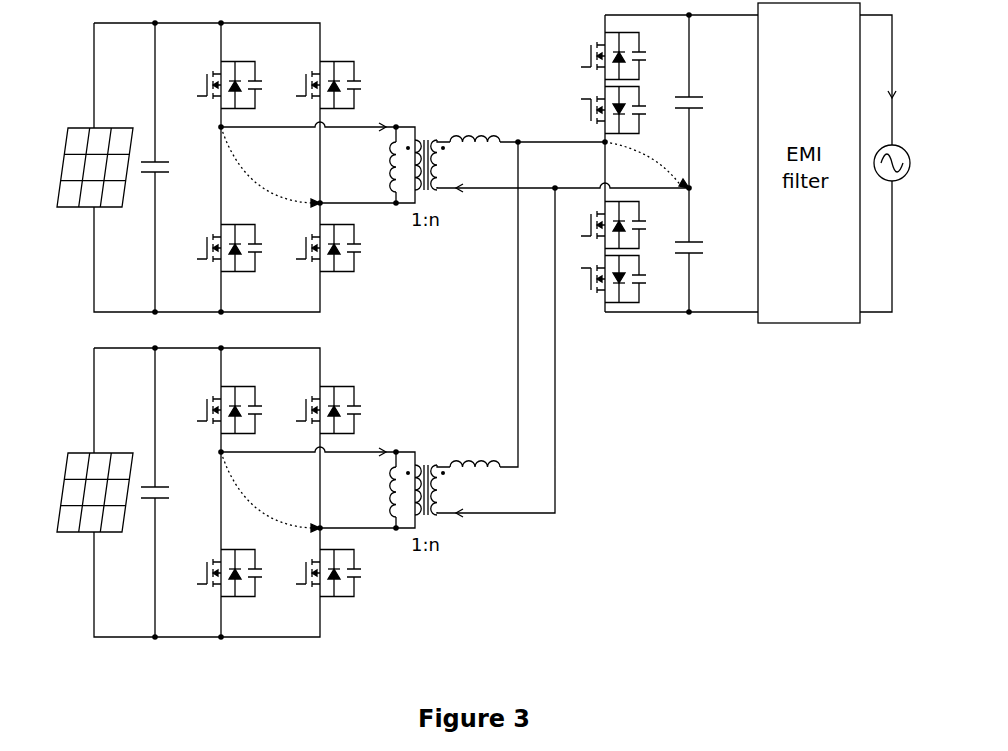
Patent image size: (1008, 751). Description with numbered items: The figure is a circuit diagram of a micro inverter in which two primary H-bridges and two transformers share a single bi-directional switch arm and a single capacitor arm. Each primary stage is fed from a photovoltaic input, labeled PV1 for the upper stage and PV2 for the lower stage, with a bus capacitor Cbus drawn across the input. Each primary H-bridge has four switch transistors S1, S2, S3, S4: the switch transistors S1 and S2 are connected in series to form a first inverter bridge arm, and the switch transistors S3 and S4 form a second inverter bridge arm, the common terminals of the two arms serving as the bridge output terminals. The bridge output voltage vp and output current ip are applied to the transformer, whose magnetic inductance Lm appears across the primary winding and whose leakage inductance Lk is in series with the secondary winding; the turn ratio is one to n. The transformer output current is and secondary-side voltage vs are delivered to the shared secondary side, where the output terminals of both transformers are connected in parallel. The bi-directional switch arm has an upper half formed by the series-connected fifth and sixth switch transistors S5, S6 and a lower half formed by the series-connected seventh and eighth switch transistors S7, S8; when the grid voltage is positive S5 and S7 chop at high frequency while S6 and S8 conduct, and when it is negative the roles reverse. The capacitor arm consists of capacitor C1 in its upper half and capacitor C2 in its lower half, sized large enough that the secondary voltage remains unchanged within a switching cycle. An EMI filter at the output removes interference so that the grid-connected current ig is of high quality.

The first photovoltaic panel PV1 is at (70, 167).
The second photovoltaic panel PV2 is at (70, 492).
The DC bus capacitor Cbus is at (176, 330).
The switch transistor S1 is at (218, 248).
The switch transistor S2 is at (218, 411).
The switch transistor S3 is at (317, 248).
The switch transistor S4 is at (317, 411).
The fifth switch transistor S5 is at (601, 56).
The sixth switch transistor S6 is at (601, 110).
The seventh switch transistor S7 is at (601, 225).
The eighth switch transistor S8 is at (601, 279).
The magnetic inductance Lm is at (406, 329).
The leakage inductance Lk is at (475, 286).
The capacitor C1 is at (703, 101).
The capacitor C2 is at (703, 250).
The output voltage of the primary H-bridge vp is at (270, 329).
The voltage on the secondary side of the transformer vs is at (647, 160).
The output current of the primary H-bridge ip is at (375, 276).
The output current of the transformer is is at (468, 336).
The output current of the micro inverter ig is at (903, 85).